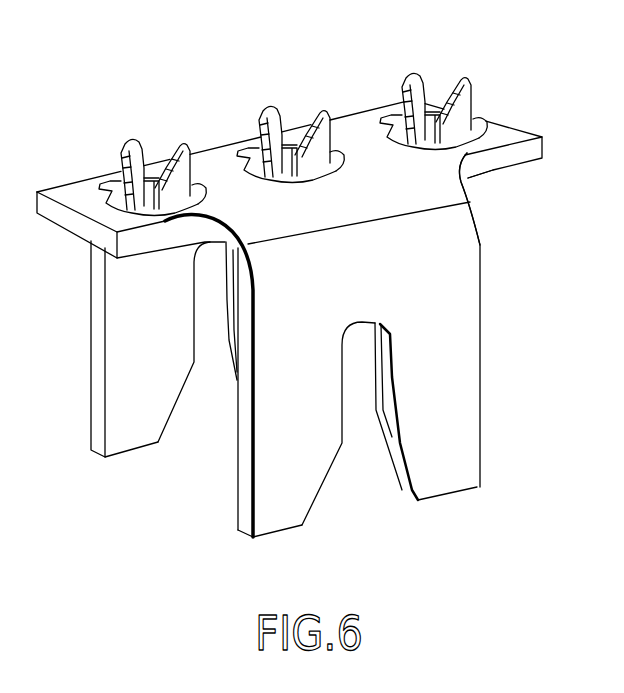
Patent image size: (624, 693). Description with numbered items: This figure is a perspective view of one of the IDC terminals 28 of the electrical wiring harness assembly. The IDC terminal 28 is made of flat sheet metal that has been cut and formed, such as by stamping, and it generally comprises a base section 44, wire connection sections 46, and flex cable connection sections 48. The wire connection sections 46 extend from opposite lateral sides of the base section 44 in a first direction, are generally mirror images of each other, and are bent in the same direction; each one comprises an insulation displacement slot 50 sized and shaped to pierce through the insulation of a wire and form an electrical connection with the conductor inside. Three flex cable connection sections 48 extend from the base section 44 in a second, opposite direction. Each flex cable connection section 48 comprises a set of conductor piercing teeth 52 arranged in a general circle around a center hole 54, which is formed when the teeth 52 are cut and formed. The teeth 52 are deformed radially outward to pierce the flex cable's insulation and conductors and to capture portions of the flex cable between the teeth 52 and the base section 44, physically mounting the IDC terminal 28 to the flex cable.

The IDC terminal 28 is at (78, 128).
The base section 44 is at (510, 123).
The wire connection section 46 is at (95, 392).
The flex cable connection section 48 is at (124, 140).
The insulation displacement slot 50 is at (202, 300).
The conductor piercing teeth 52 is at (186, 140).
The center hole 54 is at (488, 174).